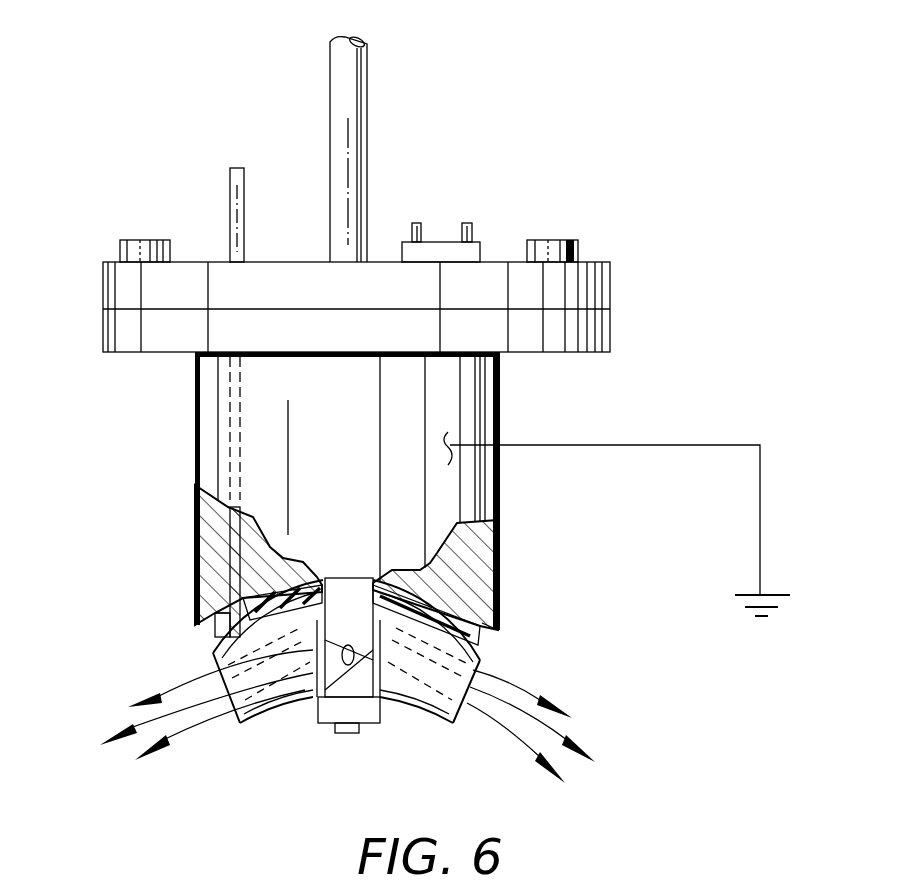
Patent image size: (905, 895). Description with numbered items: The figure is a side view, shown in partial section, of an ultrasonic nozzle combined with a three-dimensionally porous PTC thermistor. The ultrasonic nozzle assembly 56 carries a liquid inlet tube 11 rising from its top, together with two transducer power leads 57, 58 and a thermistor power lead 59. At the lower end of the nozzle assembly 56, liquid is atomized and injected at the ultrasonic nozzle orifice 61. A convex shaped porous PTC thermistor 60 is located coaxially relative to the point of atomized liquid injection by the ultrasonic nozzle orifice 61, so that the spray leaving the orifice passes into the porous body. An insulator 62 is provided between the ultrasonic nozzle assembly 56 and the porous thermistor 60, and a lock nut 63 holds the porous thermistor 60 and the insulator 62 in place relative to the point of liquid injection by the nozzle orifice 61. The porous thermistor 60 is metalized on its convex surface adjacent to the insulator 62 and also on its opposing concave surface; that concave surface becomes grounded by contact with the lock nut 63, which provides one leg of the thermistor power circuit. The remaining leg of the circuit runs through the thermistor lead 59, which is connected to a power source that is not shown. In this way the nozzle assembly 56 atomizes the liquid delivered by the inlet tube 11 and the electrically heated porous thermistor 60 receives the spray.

The liquid inlet tube 11 is at (362, 40).
The ultrasonic nozzle assembly 56 is at (103, 352).
The transducer power lead 57 is at (417, 222).
The transducer power lead 58 is at (467, 222).
The thermistor power lead 59 is at (231, 167).
The 3-dimensionally porous PTC thermistor 60 is at (478, 669).
The ultrasonic nozzle orifice 61 is at (346, 653).
The insulator 62 is at (213, 633).
The lock nut 63 is at (368, 716).